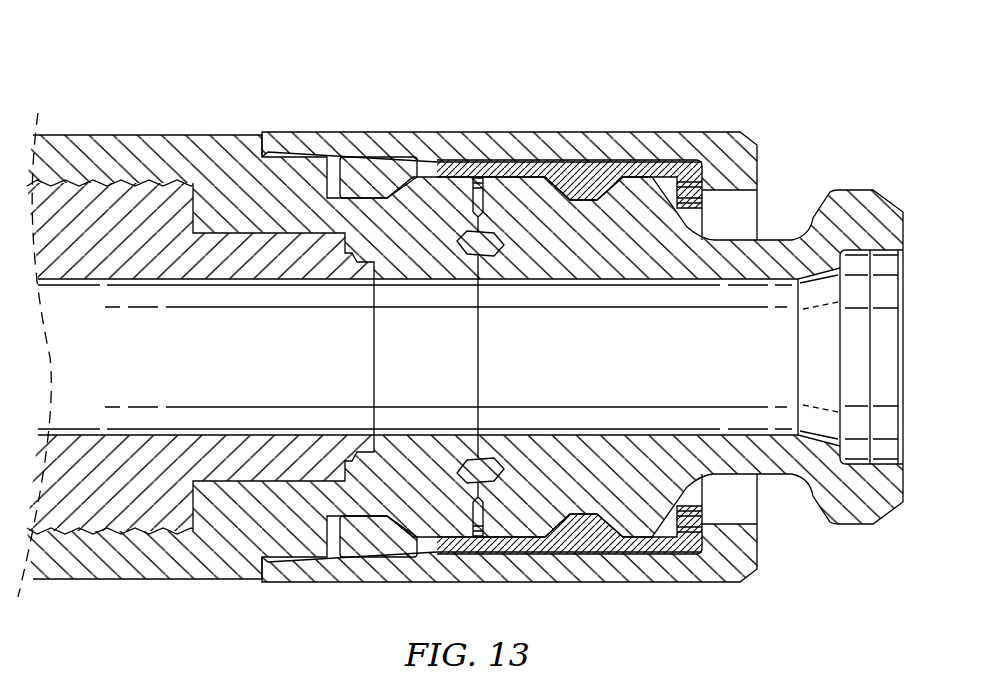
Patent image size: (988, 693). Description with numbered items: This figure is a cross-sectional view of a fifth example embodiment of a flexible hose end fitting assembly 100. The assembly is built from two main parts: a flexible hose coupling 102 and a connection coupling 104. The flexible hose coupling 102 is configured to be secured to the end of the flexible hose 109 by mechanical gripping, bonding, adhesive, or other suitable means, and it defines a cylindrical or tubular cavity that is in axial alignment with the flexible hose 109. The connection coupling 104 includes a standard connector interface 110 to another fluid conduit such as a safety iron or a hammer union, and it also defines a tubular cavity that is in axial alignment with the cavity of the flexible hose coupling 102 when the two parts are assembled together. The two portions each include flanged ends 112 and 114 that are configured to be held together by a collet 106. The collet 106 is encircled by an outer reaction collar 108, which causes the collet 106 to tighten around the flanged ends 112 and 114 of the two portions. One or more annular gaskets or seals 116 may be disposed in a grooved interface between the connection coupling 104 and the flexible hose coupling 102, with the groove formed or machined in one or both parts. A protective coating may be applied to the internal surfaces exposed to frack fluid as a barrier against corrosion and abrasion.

The flexible hose end fitting assembly 100 is at (677, 42).
The flexible hose coupling 102 is at (221, 135).
The connection coupling 104 is at (770, 240).
The collet 106 is at (433, 552).
The outer reaction collar 108 is at (520, 583).
The flexible hose 109 is at (135, 180).
The standard connector interface 110 is at (850, 190).
The flanged end 112 is at (397, 158).
The flanged end 114 is at (533, 167).
The annular gasket or seal 116 is at (483, 243).